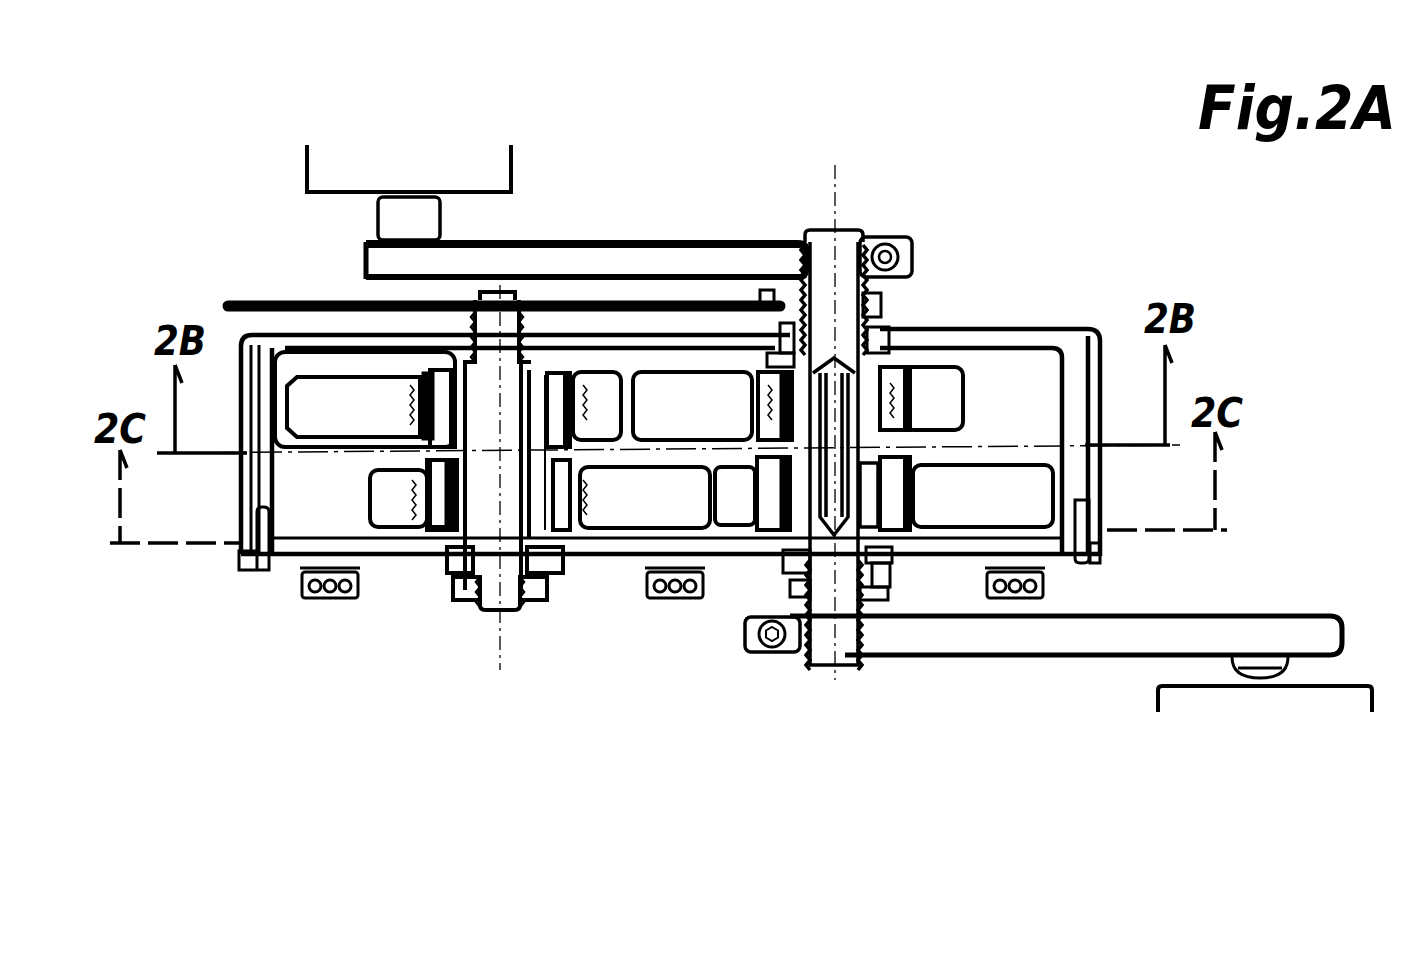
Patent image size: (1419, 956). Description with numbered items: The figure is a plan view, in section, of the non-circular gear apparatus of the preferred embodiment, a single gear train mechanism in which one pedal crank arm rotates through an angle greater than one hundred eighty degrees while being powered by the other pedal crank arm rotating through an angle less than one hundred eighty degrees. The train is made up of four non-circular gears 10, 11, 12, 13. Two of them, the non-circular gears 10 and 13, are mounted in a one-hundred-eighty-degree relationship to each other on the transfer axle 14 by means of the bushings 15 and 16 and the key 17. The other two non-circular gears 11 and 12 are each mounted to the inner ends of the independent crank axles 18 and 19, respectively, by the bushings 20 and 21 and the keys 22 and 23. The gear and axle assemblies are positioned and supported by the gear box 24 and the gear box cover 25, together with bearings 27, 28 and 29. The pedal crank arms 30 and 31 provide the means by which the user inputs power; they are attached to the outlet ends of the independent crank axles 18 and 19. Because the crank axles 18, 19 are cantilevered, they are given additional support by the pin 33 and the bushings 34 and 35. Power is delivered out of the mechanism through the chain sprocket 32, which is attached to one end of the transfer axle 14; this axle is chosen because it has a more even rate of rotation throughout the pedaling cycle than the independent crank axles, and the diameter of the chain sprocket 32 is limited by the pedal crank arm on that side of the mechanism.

The non-circular gear 10 is at (617, 493).
The non-circular gear 11 is at (1017, 483).
The non-circular gear 12 is at (737, 392).
The non-circular gear 13 is at (360, 407).
The transfer axle 14 is at (500, 477).
The bushing 15 is at (445, 495).
The bushing 16 is at (438, 410).
The key 17 is at (537, 417).
The independent crank axle 18 is at (835, 545).
The independent crank axle 19 is at (830, 275).
The bushing 20 is at (780, 473).
The bushing 21 is at (890, 395).
The key 22 is at (873, 457).
The key 23 is at (795, 388).
The gear box 24 is at (1050, 333).
The gear box cover 25 is at (291, 565).
The bearing 27 is at (873, 537).
The bearing 28 is at (878, 337).
The bearing 29 is at (447, 332).
The pedal crank arm 30 is at (1242, 633).
The pedal crank arm 31 is at (503, 263).
The chain sprocket 32 is at (243, 303).
The pin 33 is at (895, 473).
The bushing 34 is at (806, 320).
The bushing 35 is at (790, 533).